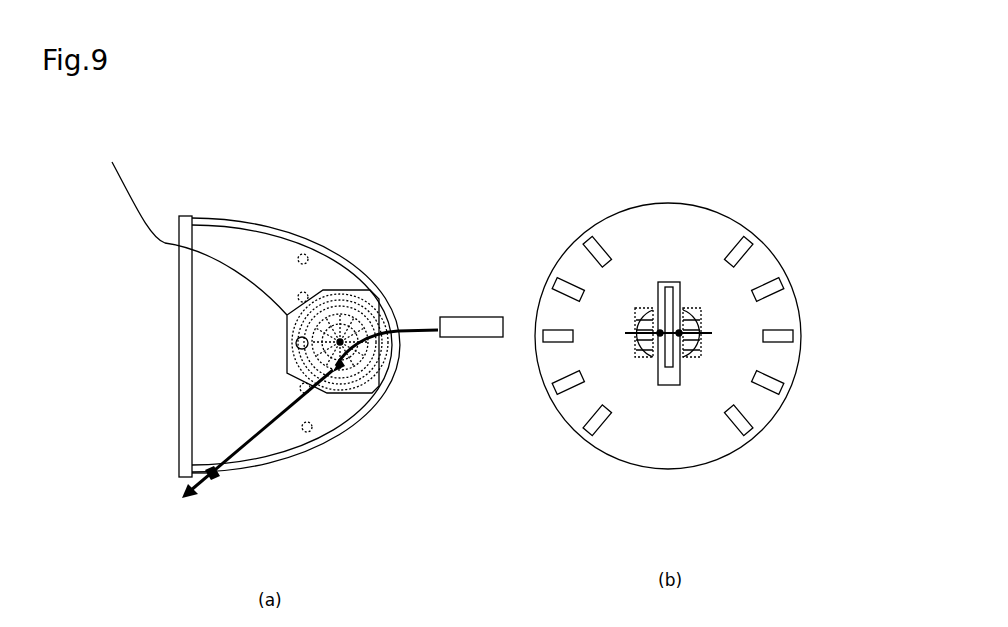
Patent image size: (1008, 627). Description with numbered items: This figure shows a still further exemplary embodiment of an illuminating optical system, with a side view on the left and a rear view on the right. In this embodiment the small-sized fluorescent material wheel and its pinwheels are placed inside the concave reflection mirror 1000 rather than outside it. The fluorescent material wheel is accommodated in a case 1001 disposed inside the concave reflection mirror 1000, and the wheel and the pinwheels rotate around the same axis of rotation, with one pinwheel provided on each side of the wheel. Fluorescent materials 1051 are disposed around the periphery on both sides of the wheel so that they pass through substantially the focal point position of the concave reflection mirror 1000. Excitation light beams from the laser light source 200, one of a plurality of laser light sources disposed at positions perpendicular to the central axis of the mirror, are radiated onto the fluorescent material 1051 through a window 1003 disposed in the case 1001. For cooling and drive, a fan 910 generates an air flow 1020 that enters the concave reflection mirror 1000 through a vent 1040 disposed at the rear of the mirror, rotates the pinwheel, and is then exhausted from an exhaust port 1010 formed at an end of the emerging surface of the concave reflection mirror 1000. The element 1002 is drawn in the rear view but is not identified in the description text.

The laser light source 200 is at (560, 275).
The fan 910 is at (450, 317).
The concave reflection mirror 1000 is at (240, 222).
The case 1001 is at (341, 290).
The shaft 1002 is at (681, 297).
The window 1003 is at (192, 305).
The exhaust port 1010 is at (215, 474).
The air flow 1020 is at (333, 438).
The vent 1040 is at (688, 358).
The fluorescent material 1051 is at (360, 386).